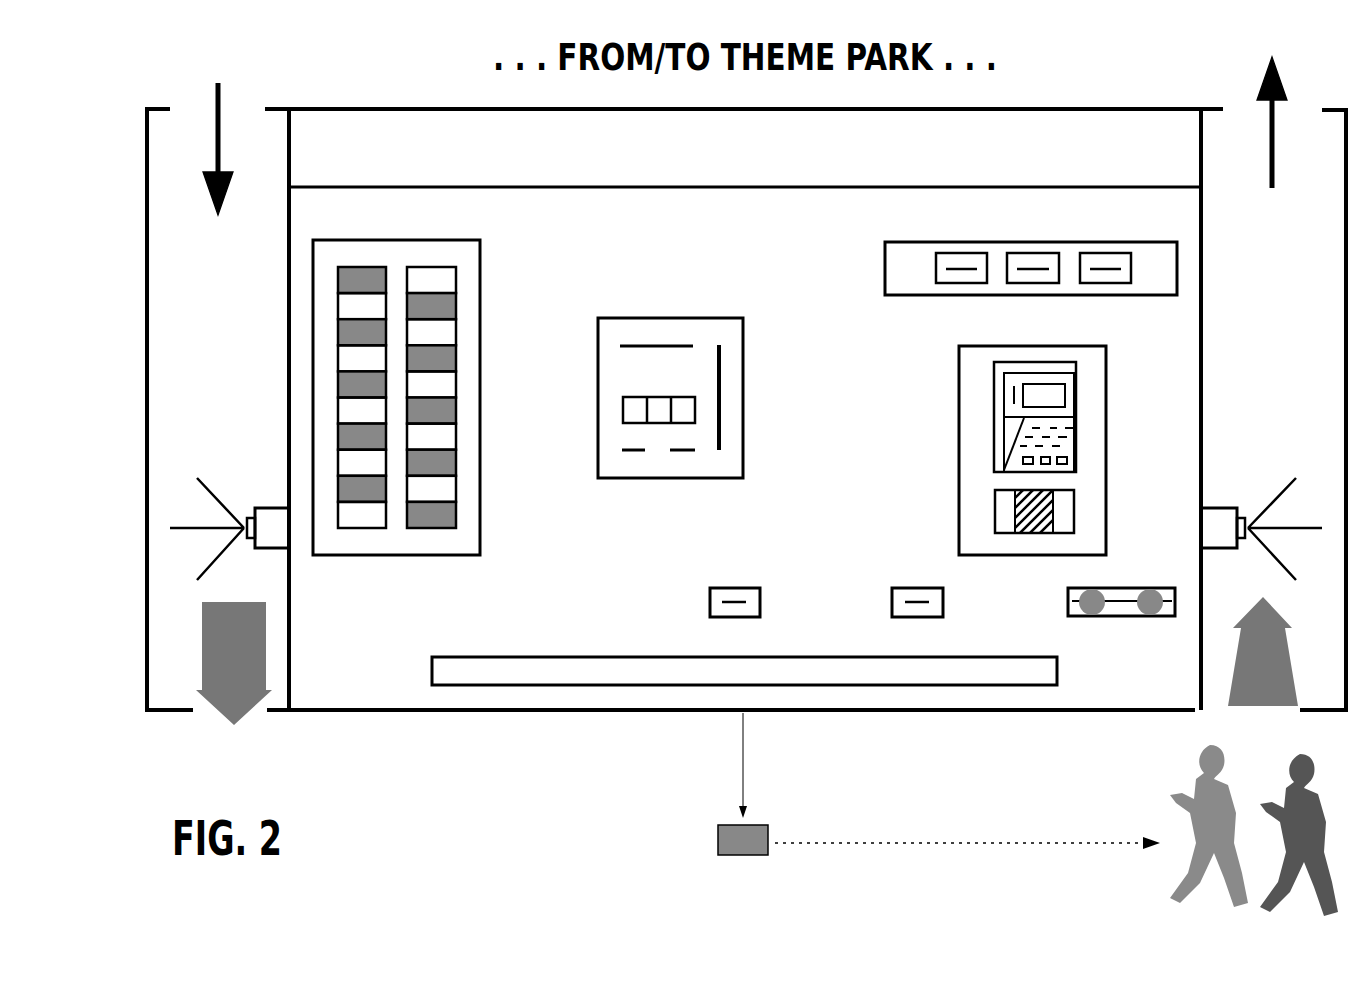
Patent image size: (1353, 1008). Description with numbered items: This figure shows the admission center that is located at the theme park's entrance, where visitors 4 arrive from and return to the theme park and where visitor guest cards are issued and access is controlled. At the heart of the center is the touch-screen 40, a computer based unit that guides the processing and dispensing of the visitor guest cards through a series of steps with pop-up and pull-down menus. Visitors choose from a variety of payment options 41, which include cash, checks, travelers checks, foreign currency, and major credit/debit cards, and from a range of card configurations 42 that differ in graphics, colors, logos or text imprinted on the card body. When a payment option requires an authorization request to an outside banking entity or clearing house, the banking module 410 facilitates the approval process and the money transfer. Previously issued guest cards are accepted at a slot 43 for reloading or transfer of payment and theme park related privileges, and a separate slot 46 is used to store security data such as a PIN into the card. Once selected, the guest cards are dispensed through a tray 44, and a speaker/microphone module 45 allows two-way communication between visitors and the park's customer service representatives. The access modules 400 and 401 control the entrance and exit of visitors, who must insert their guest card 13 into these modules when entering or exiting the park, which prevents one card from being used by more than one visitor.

The visitors 4 is at (318, 106).
The touch-screen 40 is at (598, 318).
The payment options 41 is at (884, 294).
The banking module 410 is at (958, 555).
The card configurations 42 is at (480, 555).
The slot 43 is at (892, 588).
The tray 44 is at (432, 657).
The speaker/microphone module 45 is at (1175, 618).
The slot 46 is at (710, 588).
The access module 400 is at (1224, 506).
The access module 401 is at (266, 506).
The visitor guest card 13 is at (718, 845).